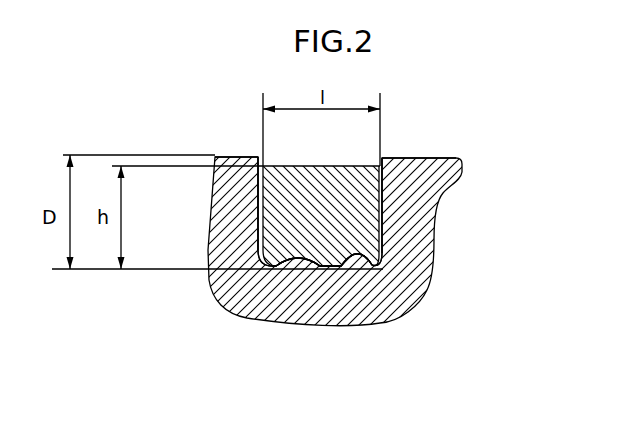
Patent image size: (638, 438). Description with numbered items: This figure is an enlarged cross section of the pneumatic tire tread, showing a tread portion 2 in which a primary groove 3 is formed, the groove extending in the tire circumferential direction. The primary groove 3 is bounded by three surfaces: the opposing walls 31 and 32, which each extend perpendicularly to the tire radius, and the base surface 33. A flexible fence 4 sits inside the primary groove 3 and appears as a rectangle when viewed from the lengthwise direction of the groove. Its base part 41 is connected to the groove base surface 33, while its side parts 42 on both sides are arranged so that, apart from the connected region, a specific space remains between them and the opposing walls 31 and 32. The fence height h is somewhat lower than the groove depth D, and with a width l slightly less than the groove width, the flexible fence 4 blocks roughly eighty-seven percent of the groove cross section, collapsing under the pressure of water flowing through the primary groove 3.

The tread portion 2 is at (248, 222).
The primary groove 3 is at (281, 165).
The opposing wall 31 is at (258, 180).
The opposing wall 32 is at (385, 160).
The base surface 33 is at (357, 253).
The flexible fence 4 is at (328, 183).
The base part 41 is at (287, 267).
The side part 42 is at (259, 233).